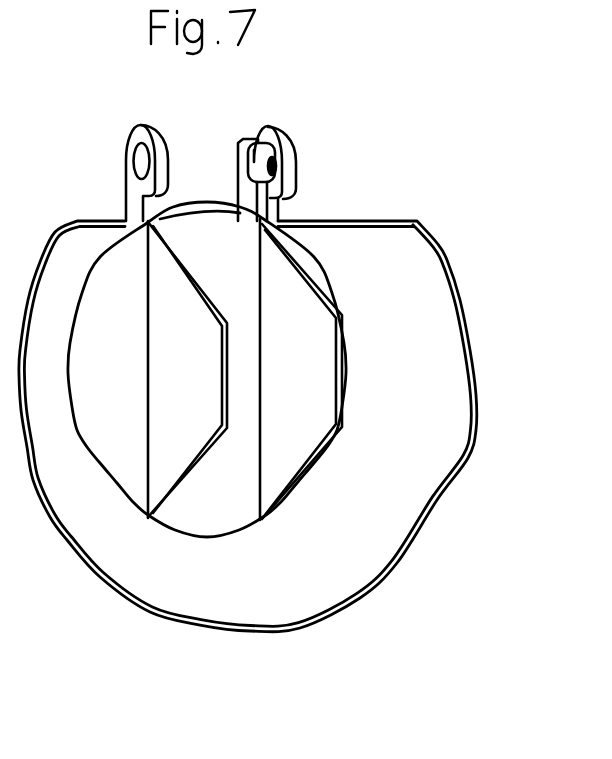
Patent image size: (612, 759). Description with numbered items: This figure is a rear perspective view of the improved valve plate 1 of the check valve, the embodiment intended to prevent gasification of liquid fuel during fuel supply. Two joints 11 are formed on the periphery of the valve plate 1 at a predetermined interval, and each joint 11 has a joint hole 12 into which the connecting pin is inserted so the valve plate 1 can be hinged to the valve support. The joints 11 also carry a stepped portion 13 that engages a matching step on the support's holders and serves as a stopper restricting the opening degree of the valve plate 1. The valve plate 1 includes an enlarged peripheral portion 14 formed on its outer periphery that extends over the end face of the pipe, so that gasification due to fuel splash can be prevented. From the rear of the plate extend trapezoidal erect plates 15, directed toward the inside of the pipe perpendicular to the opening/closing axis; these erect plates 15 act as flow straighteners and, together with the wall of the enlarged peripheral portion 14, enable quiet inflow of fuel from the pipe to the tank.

The valve plate 1 is at (193, 200).
The joints 11 is at (128, 140).
The joint hole 12 is at (137, 165).
The stepped portion 13 is at (245, 145).
The enlarged peripheral portion 14 is at (420, 333).
The trapezoidal erect plates 15 is at (300, 290).